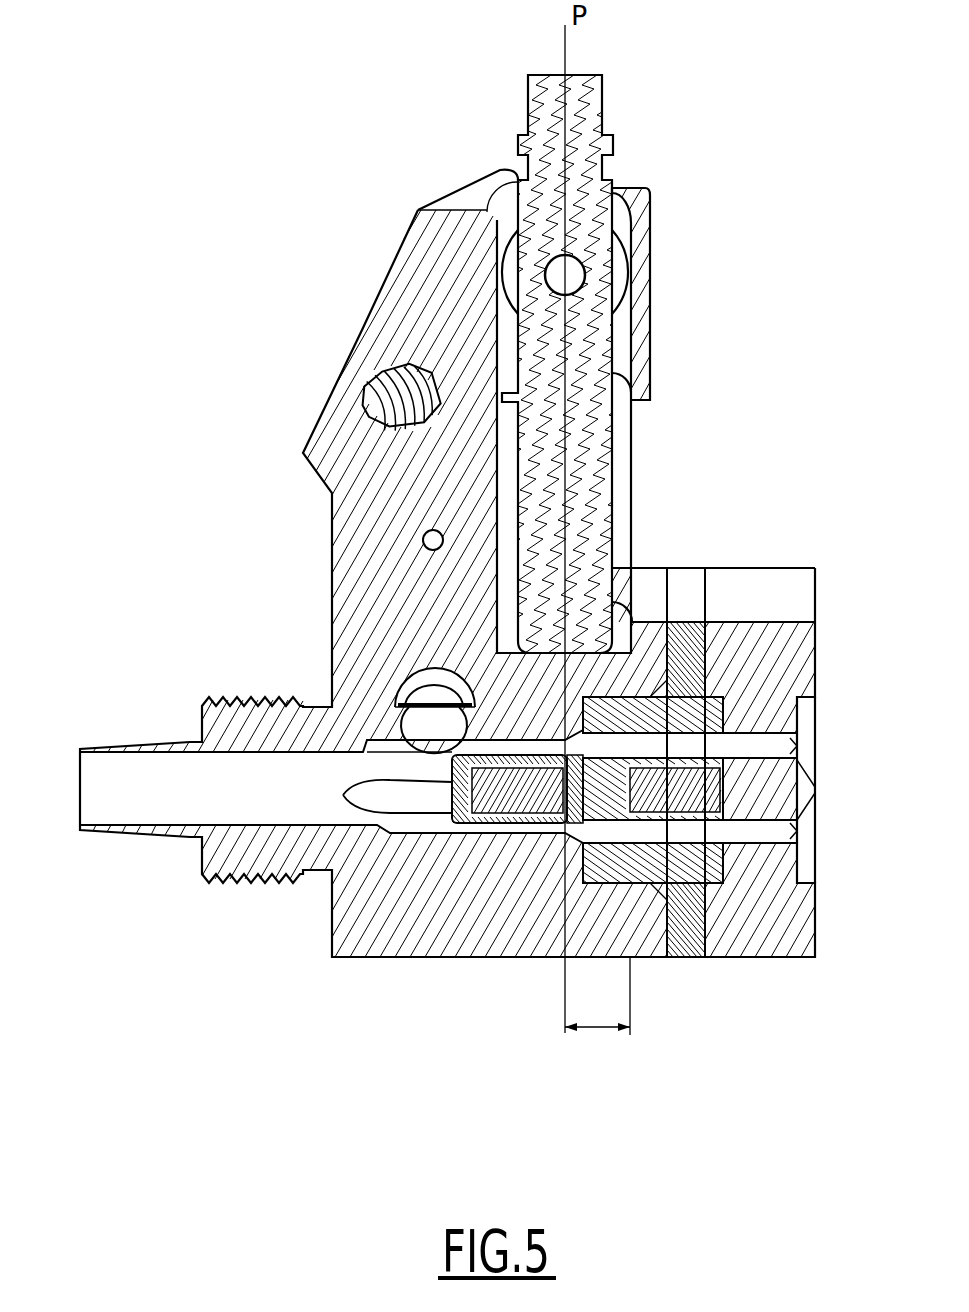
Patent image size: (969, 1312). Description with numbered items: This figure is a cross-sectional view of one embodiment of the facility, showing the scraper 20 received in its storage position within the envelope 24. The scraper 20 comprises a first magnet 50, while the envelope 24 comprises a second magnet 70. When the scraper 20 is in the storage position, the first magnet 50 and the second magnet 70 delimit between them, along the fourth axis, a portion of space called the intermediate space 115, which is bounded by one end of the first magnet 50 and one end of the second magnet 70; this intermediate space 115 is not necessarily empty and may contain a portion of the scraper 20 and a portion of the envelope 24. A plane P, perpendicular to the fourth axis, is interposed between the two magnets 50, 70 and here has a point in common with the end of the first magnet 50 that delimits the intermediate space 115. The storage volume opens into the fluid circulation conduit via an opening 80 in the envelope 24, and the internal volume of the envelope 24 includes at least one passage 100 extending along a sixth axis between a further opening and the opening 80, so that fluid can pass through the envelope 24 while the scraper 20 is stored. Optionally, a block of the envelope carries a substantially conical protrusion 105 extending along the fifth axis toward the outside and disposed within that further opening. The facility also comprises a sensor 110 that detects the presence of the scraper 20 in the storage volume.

The scraper 20 is at (388, 795).
The envelope 24 is at (373, 913).
The magnet 50 is at (517, 790).
The magnet 70 is at (680, 787).
The opening 80 is at (115, 787).
The passage 100 is at (443, 783).
The protrusion 105 is at (777, 788).
The sensor 110 is at (593, 465).
The intermediate space 115 is at (597, 996).